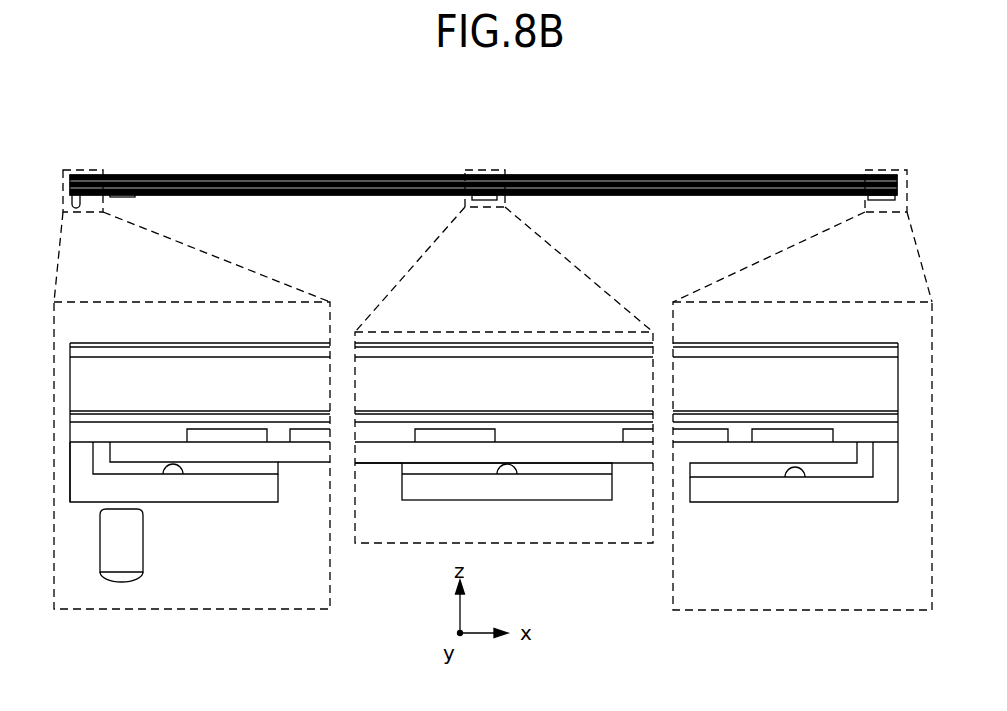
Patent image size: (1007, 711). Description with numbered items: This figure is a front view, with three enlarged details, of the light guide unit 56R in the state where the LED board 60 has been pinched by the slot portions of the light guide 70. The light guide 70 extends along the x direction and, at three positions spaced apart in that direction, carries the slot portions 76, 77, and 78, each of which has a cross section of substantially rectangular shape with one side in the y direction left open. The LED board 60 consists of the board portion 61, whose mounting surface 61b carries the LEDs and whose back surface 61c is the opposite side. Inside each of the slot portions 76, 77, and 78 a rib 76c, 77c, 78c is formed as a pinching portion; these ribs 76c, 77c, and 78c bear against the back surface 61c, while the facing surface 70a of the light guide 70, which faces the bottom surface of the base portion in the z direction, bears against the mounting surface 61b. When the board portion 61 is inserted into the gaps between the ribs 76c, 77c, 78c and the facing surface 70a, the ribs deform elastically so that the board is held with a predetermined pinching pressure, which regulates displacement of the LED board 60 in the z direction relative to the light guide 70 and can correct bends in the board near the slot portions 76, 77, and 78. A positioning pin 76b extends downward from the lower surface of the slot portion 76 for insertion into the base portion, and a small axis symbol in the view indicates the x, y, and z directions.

The light guide unit 56R is at (240, 160).
The light guide 70 is at (357, 176).
The LED board 60 is at (310, 210).
The board portion 61 is at (657, 197).
The mounting surface 61b is at (383, 441).
The back surface 61c is at (372, 463).
The facing surface 70a is at (122, 442).
The slot portion 76 is at (222, 500).
The positioning pin 76b is at (125, 553).
The rib 76c is at (185, 500).
The slot portion 77 is at (560, 502).
The rib 77c is at (516, 500).
The slot portion 78 is at (832, 500).
The rib 78c is at (788, 503).